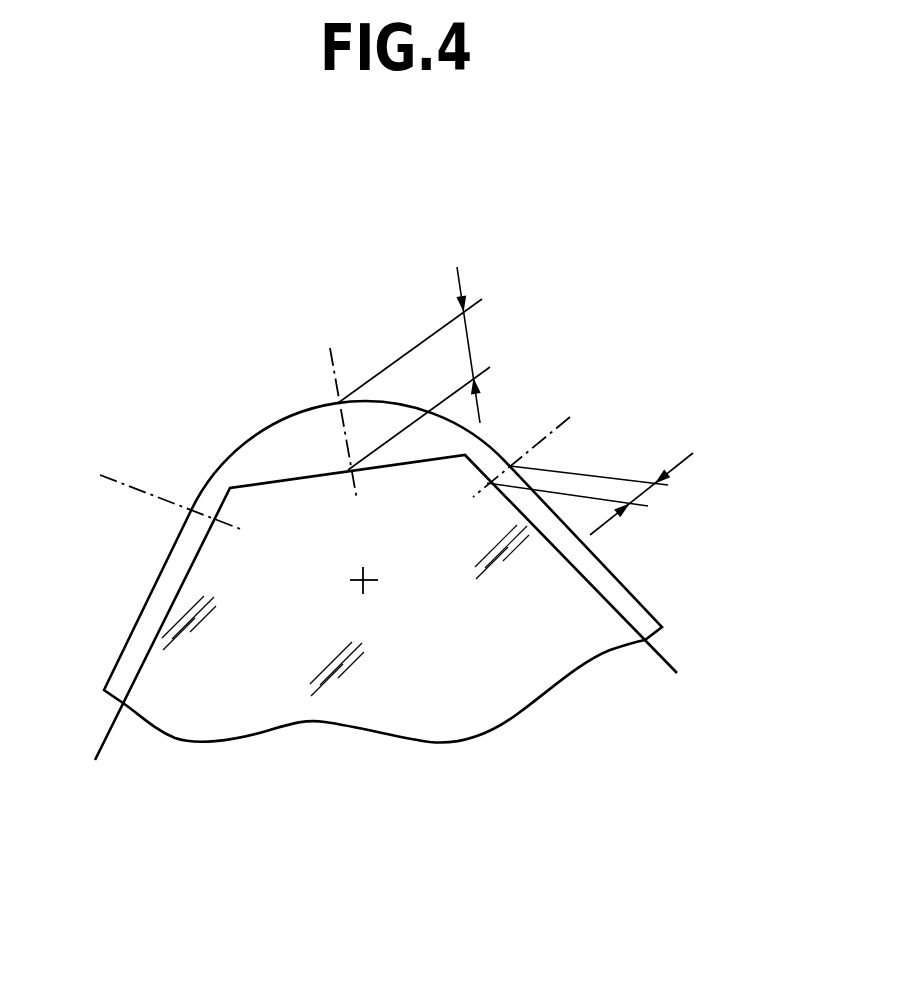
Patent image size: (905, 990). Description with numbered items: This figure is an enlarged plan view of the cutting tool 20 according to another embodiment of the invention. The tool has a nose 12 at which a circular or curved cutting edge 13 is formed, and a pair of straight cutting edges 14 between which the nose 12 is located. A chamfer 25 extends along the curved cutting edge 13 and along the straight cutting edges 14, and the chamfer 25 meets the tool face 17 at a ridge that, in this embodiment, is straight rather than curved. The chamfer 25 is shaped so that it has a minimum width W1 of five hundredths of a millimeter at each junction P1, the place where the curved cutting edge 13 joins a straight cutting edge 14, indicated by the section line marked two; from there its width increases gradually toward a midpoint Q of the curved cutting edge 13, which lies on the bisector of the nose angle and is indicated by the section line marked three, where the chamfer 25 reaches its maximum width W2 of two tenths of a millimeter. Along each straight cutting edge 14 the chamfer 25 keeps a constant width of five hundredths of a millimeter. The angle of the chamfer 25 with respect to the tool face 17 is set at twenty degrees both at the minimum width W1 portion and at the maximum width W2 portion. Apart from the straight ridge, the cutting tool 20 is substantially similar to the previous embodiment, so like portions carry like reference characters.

The nose 12 is at (222, 403).
The curved cutting edge 13 is at (298, 410).
The straight cutting edge 14 is at (120, 657).
The tool face 17 is at (220, 648).
The cutting tool 20 is at (586, 648).
The chamfer 25 is at (286, 462).
The midpoint of the curved cutting edge Q is at (333, 400).
The junction P1 is at (188, 512).
The minimum width W1 is at (613, 494).
The maximum width W2 is at (431, 366).